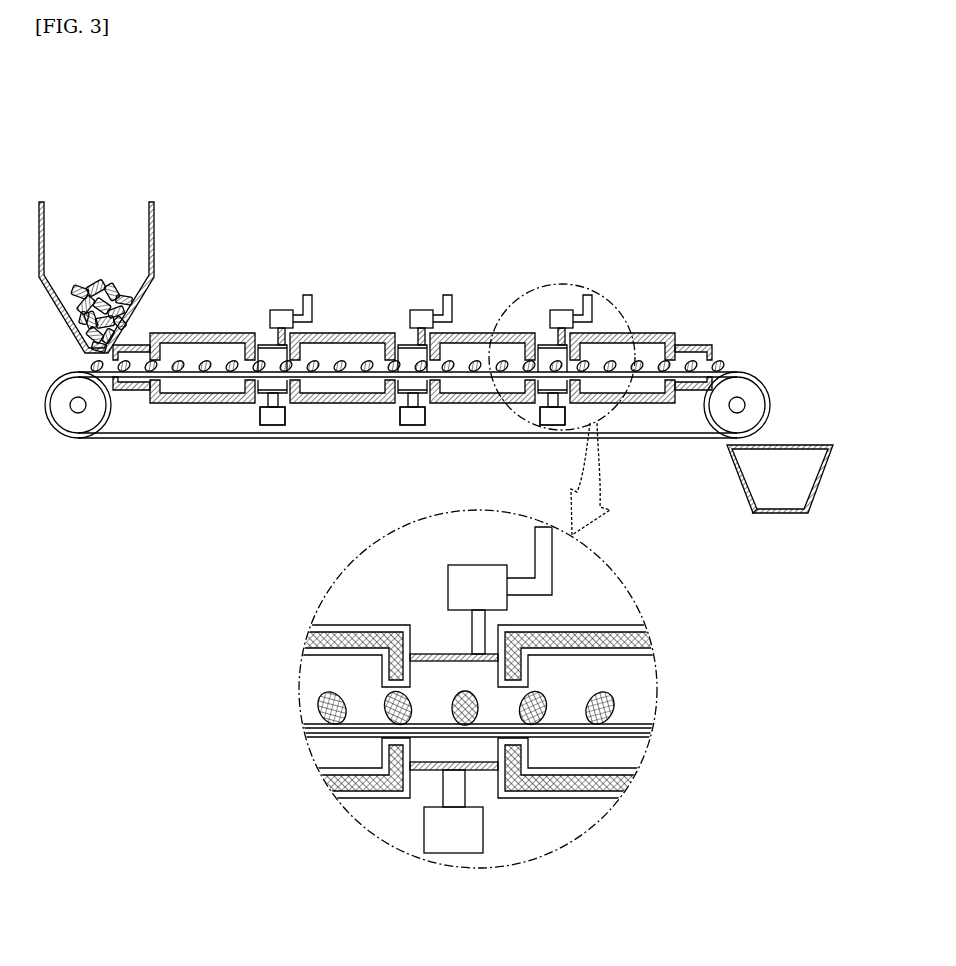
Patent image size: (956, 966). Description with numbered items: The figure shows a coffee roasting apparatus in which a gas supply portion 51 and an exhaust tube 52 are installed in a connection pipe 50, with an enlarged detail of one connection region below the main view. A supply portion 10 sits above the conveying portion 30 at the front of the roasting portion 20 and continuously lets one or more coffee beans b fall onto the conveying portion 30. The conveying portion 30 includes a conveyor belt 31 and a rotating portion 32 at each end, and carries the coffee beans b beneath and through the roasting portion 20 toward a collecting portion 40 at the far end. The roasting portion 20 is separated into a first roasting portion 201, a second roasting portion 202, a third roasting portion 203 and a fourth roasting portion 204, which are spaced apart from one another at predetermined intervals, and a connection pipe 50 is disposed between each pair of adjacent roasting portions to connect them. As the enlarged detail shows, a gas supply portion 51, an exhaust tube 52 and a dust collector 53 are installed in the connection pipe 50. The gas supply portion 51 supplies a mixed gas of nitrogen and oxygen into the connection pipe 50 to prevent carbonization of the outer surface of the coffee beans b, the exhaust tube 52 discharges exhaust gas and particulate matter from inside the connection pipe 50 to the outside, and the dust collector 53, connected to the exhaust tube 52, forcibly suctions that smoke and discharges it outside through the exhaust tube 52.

The supply portion 10 is at (140, 200).
The roasting portion 20 is at (595, 265).
The first roasting portion 201 is at (215, 333).
The second roasting portion 202 is at (345, 333).
The third roasting portion 203 is at (487, 333).
The fourth roasting portion 204 is at (612, 333).
The conveying portion 30 is at (407, 580).
The conveyor belt 31 is at (203, 440).
The rotating portion 32 is at (90, 420).
The collecting portion 40 is at (743, 493).
The connection pipe 50 is at (400, 406).
The gas supply portion 51 is at (276, 427).
The exhaust tube 52 is at (483, 622).
The dust collector 53 is at (470, 565).
The coffee bean b is at (616, 700).